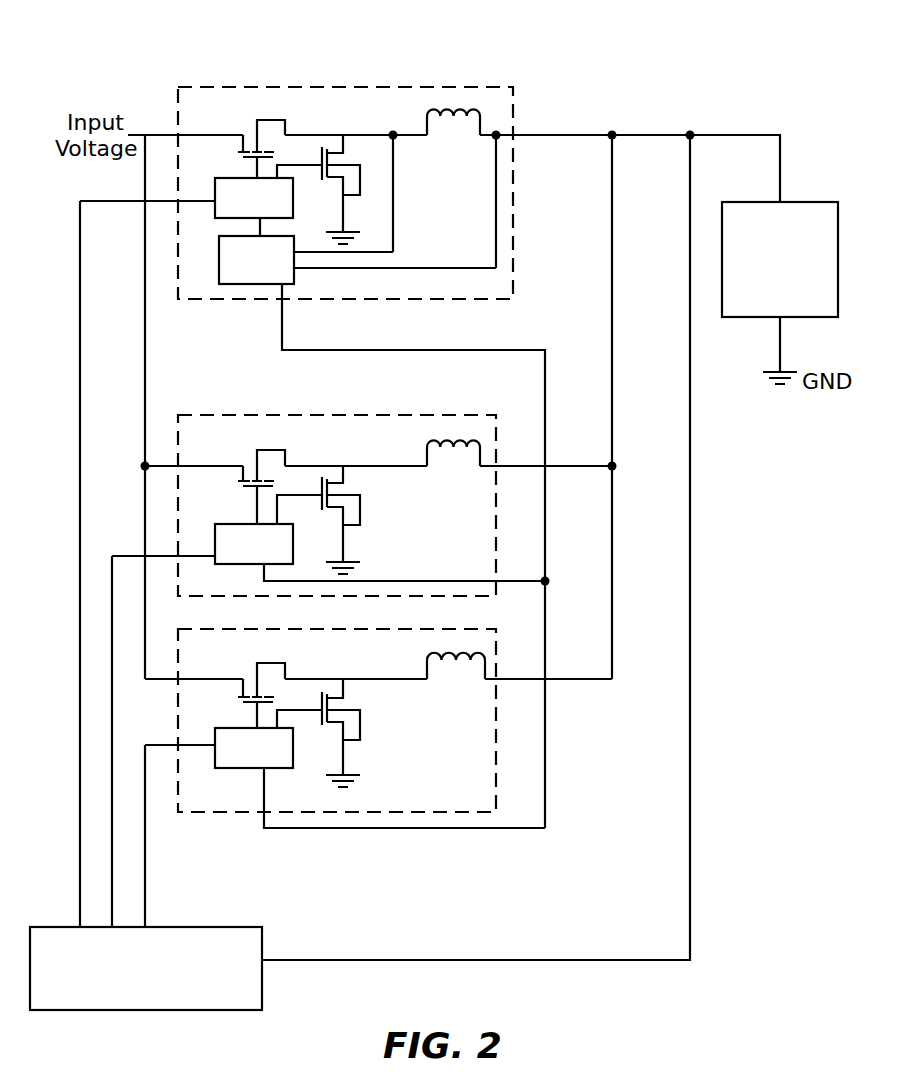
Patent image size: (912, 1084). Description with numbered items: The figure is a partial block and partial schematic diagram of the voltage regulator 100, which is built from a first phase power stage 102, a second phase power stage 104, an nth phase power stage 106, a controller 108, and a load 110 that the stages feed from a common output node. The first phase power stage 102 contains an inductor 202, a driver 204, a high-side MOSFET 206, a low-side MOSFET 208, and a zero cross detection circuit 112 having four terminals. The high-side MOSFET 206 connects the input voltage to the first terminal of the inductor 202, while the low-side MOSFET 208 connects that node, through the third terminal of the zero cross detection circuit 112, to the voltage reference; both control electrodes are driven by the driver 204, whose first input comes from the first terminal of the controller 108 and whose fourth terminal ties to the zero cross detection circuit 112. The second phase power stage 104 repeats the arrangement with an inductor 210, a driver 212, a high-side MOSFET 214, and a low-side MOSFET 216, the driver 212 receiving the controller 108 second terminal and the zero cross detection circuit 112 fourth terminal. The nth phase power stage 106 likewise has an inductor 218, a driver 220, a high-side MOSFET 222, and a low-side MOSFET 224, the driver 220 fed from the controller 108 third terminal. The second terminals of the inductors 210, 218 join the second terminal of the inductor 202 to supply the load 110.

The voltage regulator 100 is at (699, 95).
The first phase power stage 102 is at (213, 86).
The second phase power stage 104 is at (300, 415).
The nth phase power stage 106 is at (190, 630).
The controller 108 is at (182, 927).
The load 110 is at (792, 201).
The zero cross detection circuit 112 is at (219, 252).
The inductor 202 is at (480, 117).
The driver 204 is at (293, 216).
The high-side MOSFET 206 is at (268, 150).
The low-side MOSFET 208 is at (340, 145).
The inductor 210 is at (430, 442).
The driver 212 is at (293, 564).
The high-side MOSFET 214 is at (268, 480).
The low-side MOSFET 216 is at (323, 477).
The inductor 218 is at (437, 660).
The driver 220 is at (294, 750).
The high-side MOSFET 222 is at (243, 688).
The low-side MOSFET 224 is at (328, 697).